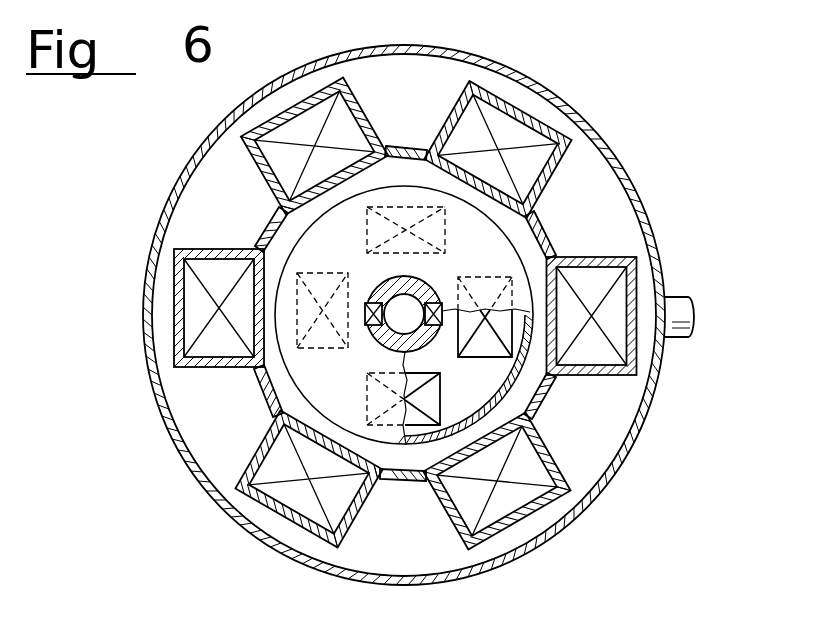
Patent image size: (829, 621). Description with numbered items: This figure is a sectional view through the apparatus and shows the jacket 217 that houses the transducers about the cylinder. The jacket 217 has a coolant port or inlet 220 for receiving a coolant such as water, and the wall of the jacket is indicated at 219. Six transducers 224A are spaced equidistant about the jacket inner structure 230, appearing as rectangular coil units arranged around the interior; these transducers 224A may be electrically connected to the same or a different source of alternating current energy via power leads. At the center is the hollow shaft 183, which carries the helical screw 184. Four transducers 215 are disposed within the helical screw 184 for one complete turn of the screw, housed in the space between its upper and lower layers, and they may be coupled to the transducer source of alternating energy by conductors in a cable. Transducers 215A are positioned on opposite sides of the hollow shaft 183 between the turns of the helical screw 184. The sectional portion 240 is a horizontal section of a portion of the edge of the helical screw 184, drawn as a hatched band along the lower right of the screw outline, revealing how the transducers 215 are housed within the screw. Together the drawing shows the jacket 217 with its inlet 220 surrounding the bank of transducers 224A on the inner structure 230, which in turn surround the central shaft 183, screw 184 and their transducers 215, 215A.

The hollow shaft 183 is at (418, 283).
The helical screw 184 is at (492, 250).
The transducer 215 is at (345, 236).
The transducer 215A is at (368, 327).
The jacket 217 is at (617, 144).
The housing wall 219 is at (631, 177).
The inlet 220 is at (692, 299).
The transducer 224A is at (255, 160).
The jacket inner structure 230 is at (552, 228).
The sectional portion 240 is at (515, 374).